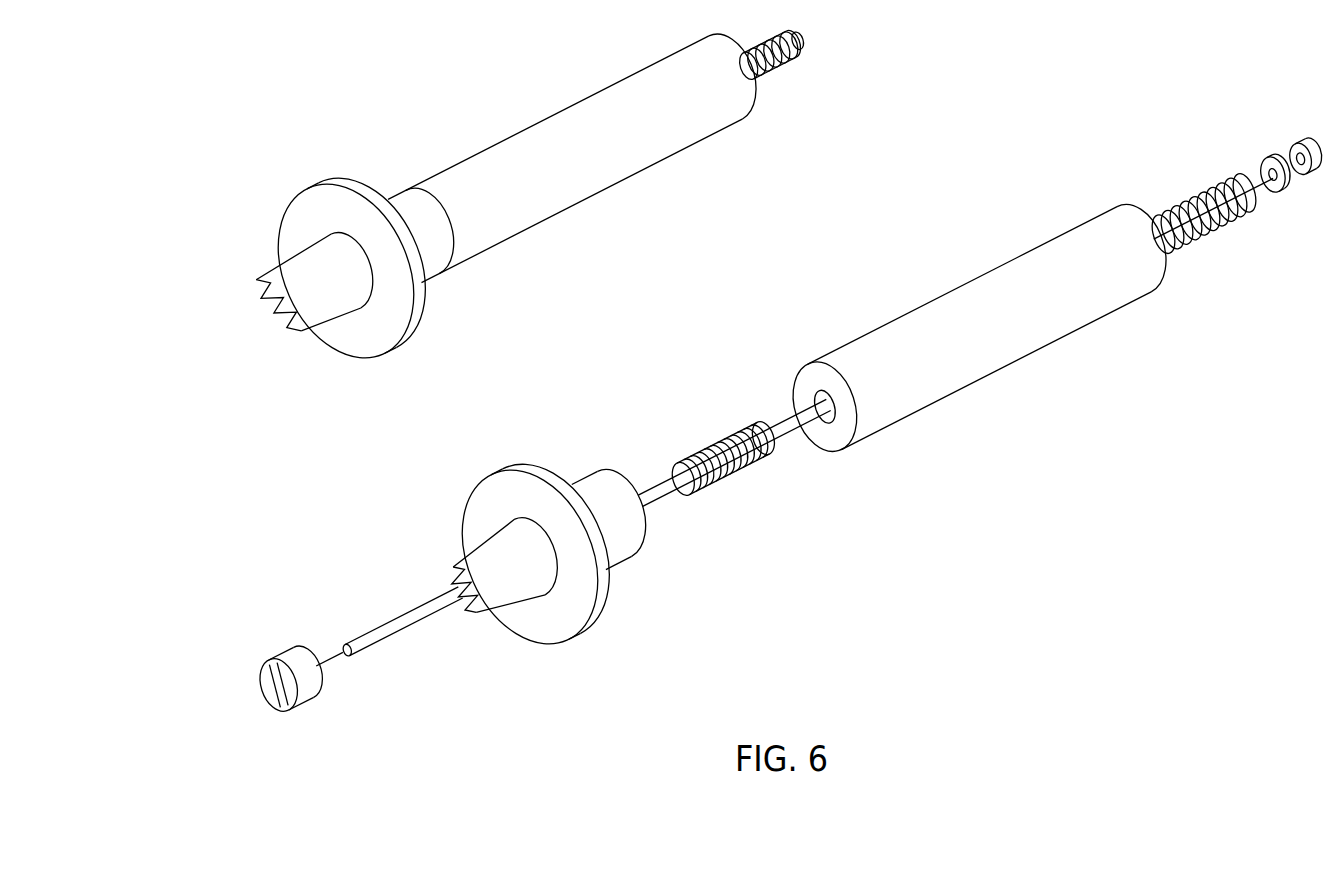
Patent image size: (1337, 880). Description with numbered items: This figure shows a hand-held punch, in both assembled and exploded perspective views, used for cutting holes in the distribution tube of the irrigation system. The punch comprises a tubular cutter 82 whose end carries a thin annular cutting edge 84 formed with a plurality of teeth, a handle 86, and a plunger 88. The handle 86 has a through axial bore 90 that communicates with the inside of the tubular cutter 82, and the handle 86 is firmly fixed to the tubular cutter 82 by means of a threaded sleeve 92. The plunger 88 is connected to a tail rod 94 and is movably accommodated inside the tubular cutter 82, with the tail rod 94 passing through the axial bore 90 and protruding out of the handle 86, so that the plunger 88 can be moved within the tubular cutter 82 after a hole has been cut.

The tubular cutter 82 is at (355, 188).
The annular cutting edge 84 is at (337, 290).
The handle 86 is at (581, 168).
The plunger 88 is at (280, 652).
The axial bore 90 is at (792, 400).
The threaded sleeve 92 is at (702, 452).
The tail rod 94 is at (805, 40).